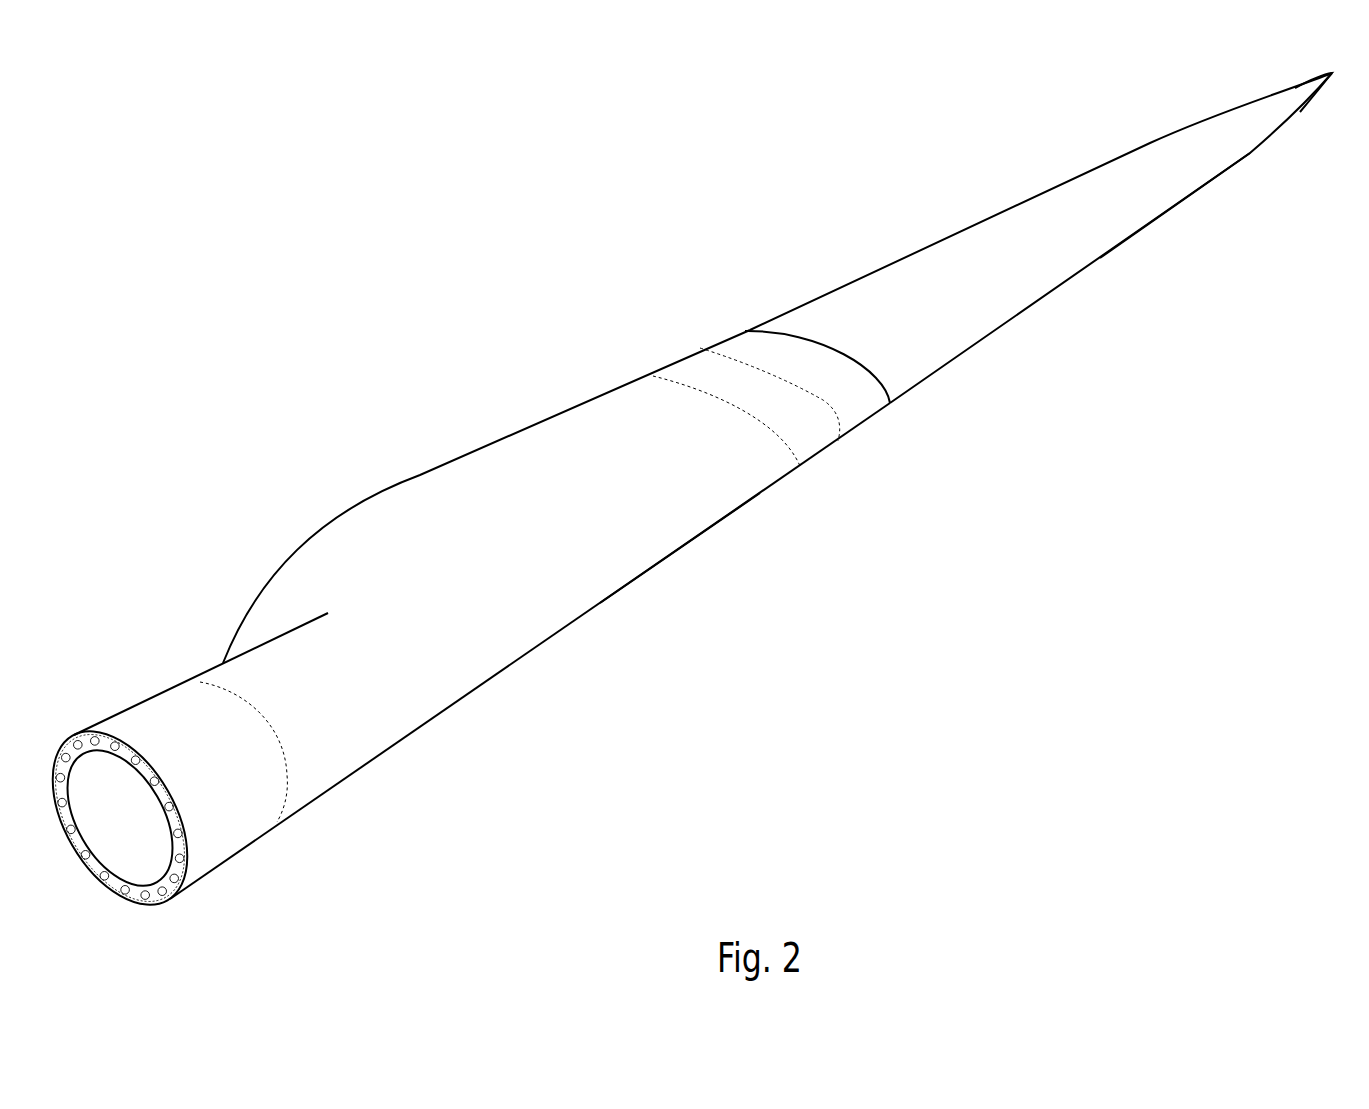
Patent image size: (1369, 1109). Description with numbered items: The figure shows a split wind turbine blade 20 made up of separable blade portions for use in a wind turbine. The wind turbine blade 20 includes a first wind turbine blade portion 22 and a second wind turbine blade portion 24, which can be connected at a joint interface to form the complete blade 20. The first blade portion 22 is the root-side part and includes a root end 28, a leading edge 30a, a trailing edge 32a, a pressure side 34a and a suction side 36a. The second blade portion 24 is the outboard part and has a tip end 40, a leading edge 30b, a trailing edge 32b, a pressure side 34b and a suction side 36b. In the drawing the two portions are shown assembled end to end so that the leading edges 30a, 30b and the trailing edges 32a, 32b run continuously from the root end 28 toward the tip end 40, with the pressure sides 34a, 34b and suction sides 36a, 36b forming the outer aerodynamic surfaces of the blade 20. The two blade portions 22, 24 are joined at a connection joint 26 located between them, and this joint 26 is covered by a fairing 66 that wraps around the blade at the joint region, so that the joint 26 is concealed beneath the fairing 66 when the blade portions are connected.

The wind turbine blade 20 is at (350, 303).
The first wind turbine blade portion 22 is at (570, 453).
The second wind turbine blade portion 24 is at (872, 318).
The connection joint 26 is at (751, 352).
The root end 28 is at (245, 827).
The leading edge 30a is at (617, 602).
The leading edge 30b is at (1022, 320).
The trailing edge 32a is at (412, 478).
The trailing edge 32b is at (1017, 201).
The pressure side 34a is at (458, 599).
The pressure side 34b is at (968, 312).
The suction side 36a is at (718, 532).
The suction side 36b is at (1203, 193).
The tip end 40 is at (1297, 100).
The fairing 66 is at (840, 420).